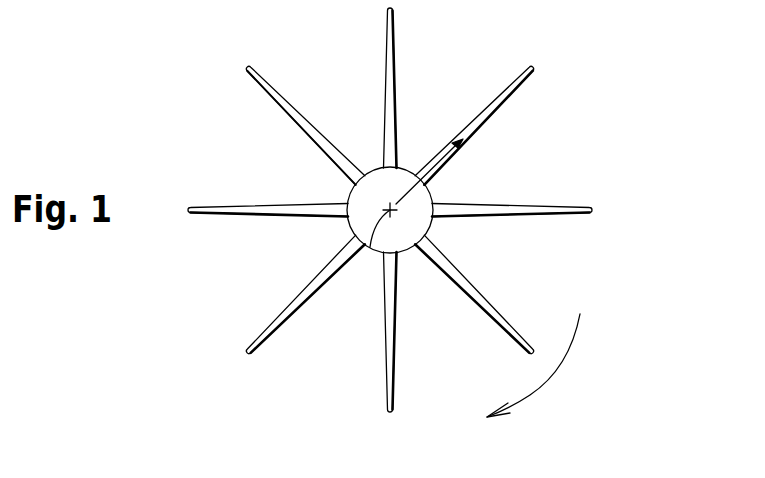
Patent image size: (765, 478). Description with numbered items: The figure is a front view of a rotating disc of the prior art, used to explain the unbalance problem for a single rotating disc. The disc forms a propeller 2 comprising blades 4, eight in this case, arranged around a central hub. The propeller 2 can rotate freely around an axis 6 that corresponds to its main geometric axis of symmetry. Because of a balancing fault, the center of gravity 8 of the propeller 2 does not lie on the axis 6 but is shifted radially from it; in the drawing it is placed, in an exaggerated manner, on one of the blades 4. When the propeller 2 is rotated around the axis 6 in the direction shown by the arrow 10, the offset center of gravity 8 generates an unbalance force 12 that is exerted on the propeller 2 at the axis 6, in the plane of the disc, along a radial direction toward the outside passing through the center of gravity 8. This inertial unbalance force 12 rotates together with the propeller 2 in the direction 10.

The propeller 2 is at (563, 76).
The blades 4 is at (553, 205).
The axis 6 is at (371, 250).
The center of gravity 8 is at (483, 117).
The arrow 10 is at (575, 352).
The unbalance force 12 is at (436, 199).